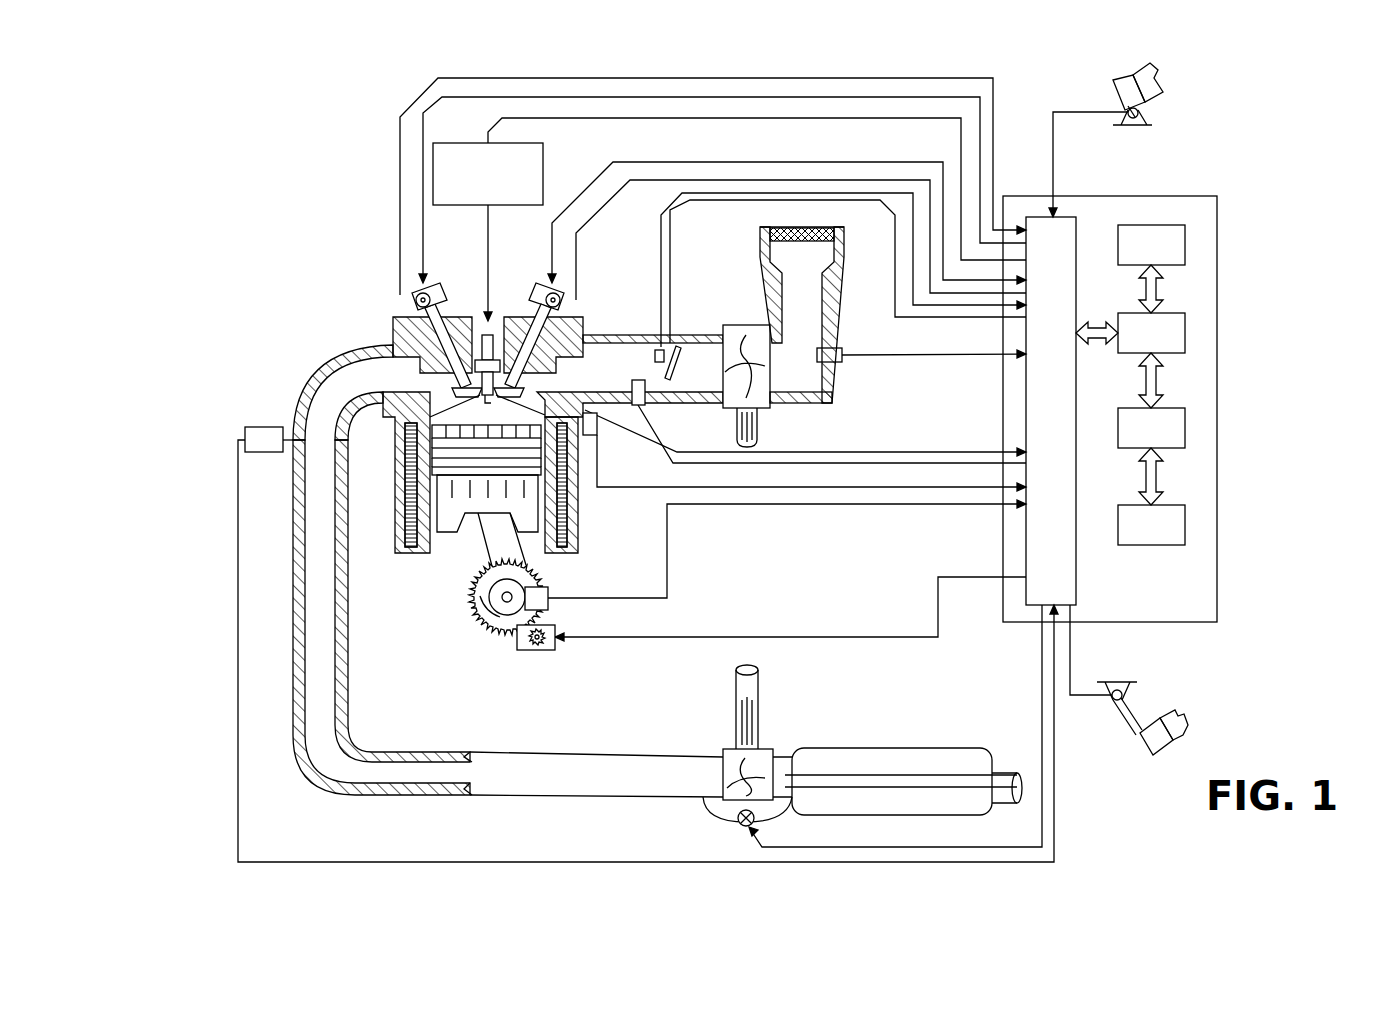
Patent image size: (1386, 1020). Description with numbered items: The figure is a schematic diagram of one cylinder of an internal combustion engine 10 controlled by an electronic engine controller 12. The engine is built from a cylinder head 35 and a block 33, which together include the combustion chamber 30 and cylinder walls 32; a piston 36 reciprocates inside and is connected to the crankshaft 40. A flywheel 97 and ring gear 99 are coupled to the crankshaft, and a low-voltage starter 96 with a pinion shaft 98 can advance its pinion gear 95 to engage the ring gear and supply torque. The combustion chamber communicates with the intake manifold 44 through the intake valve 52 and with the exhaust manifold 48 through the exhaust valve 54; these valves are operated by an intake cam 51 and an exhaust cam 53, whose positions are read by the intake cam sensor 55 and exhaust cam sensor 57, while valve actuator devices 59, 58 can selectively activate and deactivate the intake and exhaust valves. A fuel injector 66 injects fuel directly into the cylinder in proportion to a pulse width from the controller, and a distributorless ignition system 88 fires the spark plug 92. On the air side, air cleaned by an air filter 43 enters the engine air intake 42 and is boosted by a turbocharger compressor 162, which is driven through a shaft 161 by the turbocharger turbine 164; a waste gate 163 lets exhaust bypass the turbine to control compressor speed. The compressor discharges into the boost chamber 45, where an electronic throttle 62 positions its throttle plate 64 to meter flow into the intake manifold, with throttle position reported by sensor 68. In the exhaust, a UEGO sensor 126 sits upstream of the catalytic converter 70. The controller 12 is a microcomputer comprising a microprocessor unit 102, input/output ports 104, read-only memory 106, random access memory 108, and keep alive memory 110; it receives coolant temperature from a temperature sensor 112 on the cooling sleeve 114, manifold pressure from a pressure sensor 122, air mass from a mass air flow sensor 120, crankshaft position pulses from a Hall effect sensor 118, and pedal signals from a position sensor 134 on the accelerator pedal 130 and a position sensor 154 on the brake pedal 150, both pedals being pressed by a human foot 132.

The internal combustion engine 10 is at (328, 270).
The electronic engine controller 12 is at (1210, 196).
The combustion chamber 30 is at (405, 505).
The cylinder walls 32 is at (432, 545).
The block 33 is at (388, 450).
The cylinder head 35 is at (386, 320).
The piston 36 is at (470, 505).
The crankshaft 40 is at (485, 592).
The engine air intake 42 is at (769, 307).
The air filter 43 is at (810, 243).
The intake manifold 44 is at (583, 379).
The boost chamber 45 is at (717, 345).
The exhaust manifold 48 is at (350, 386).
The intake cam 51 is at (546, 292).
The intake valve 52 is at (535, 378).
The exhaust cam 53 is at (430, 292).
The exhaust valve 54 is at (400, 357).
The intake cam sensor 55 is at (550, 310).
The exhaust cam sensor 57 is at (425, 267).
The valve actuator device 58 is at (440, 304).
The valve actuator device 59 is at (546, 306).
The electronic throttle 62 is at (669, 347).
The throttle plate 64 is at (672, 376).
The fuel injector 66 is at (598, 425).
The throttle position sensor 68 is at (658, 348).
The catalytic converter 70 is at (832, 748).
The distributorless ignition system 88 is at (448, 143).
The spark plug 92 is at (495, 330).
The pinion gear 95 is at (541, 652).
The starter 96 is at (530, 659).
The flywheel 97 is at (487, 593).
The pinion shaft 98 is at (530, 652).
The ring gear 99 is at (506, 636).
The microprocessor unit 102 is at (1185, 329).
The input/output ports 104 is at (1076, 222).
The read-only memory 106 is at (1185, 240).
The random access memory 108 is at (1185, 424).
The keep alive memory 110 is at (1185, 522).
The temperature sensor 112 is at (596, 445).
The cooling sleeve 114 is at (568, 505).
The Hall effect sensor 118 is at (548, 590).
The mass air flow sensor 120 is at (845, 352).
The pressure sensor 122 is at (643, 400).
The Universal Exhaust Gas Oxygen sensor 126 is at (245, 432).
The accelerator pedal 130 is at (1166, 93).
The human foot 132 is at (1162, 72).
The position sensor 134 is at (1140, 118).
The brake pedal 150 is at (1125, 707).
The position sensor 154 is at (1110, 690).
The shaft 161 is at (758, 722).
The turbocharger compressor 162 is at (758, 400).
The waste gate 163 is at (740, 830).
The turbocharger turbine 164 is at (725, 748).